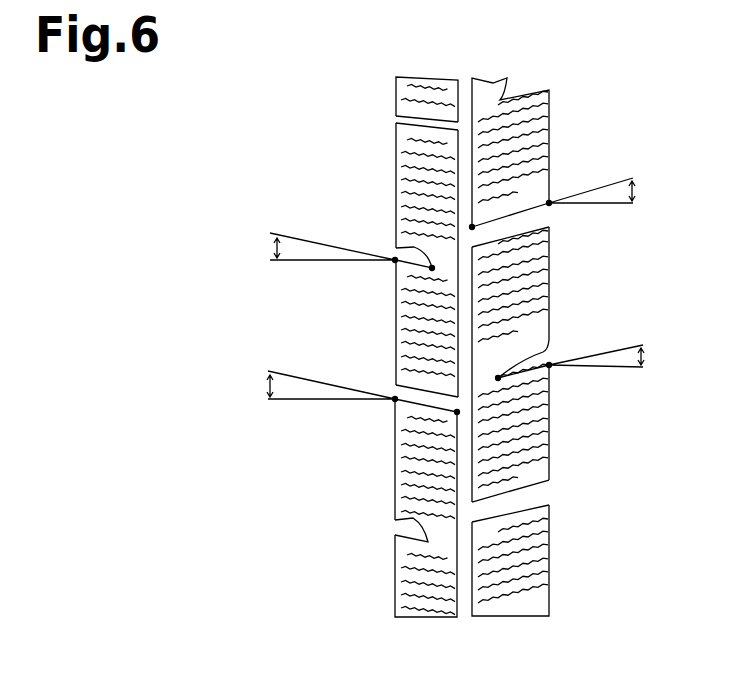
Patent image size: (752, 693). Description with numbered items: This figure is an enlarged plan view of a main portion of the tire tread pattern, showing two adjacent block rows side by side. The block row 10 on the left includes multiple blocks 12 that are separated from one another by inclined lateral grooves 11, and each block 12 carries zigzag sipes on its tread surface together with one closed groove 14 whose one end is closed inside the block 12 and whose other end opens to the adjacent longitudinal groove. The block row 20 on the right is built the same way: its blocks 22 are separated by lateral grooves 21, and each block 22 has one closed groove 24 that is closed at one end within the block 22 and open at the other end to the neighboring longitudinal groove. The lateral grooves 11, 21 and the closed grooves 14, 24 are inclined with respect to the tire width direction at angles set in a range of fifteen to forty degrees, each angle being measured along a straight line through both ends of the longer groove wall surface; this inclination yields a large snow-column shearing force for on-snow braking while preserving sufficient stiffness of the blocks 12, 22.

The block row 10 is at (458, 638).
The block row 20 is at (552, 638).
The lateral groove 11 is at (392, 111).
The block 12 is at (393, 175).
The closed groove 14 is at (394, 251).
The lateral groove 21 is at (531, 218).
The block 22 is at (550, 122).
The closed groove 24 is at (535, 85).